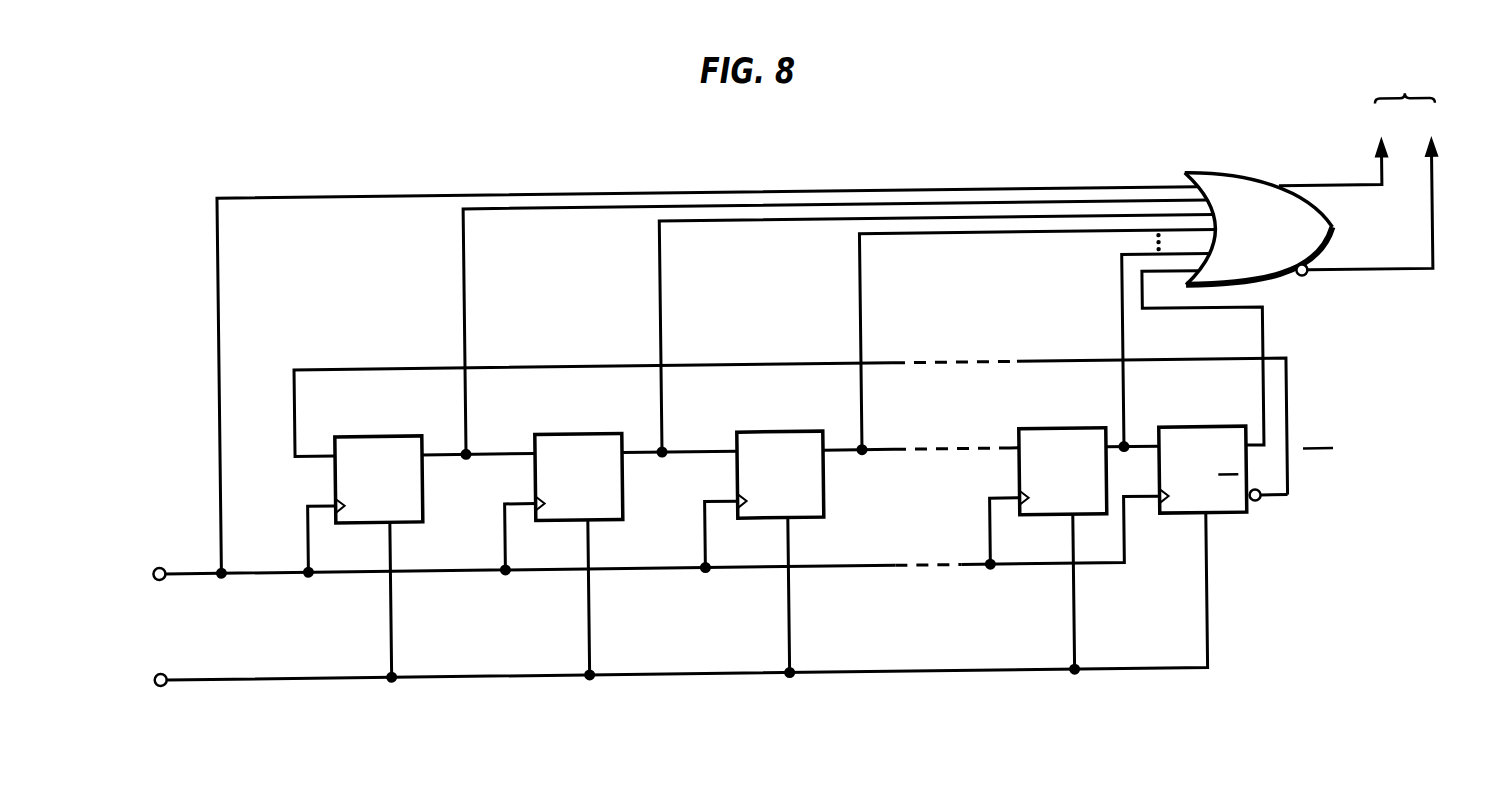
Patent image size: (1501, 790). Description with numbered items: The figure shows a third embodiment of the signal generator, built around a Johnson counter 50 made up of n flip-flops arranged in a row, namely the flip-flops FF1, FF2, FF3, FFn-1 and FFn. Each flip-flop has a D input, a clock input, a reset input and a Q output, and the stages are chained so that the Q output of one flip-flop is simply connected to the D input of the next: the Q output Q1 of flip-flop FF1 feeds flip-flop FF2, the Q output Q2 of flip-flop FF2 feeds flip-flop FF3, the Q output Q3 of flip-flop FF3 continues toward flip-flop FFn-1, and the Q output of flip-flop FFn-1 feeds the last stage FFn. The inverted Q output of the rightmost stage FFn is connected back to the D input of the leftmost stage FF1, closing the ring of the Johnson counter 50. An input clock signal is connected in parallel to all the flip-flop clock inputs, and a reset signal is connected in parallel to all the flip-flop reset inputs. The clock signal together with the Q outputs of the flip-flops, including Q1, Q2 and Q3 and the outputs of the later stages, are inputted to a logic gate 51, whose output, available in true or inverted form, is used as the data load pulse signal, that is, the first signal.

The Johnson counter 50 is at (714, 466).
The logic gate 51 is at (1212, 176).
The flip-flop FF1 is at (378, 464).
The flip-flop FF2 is at (578, 462).
The flip-flop FF3 is at (779, 459).
The flip-flop FFn-1 is at (1062, 457).
The flip-flop FFn is at (1202, 455).
The Q output Q1 is at (836, 327).
The Q output Q2 is at (937, 333).
The Q output Q3 is at (1038, 339).